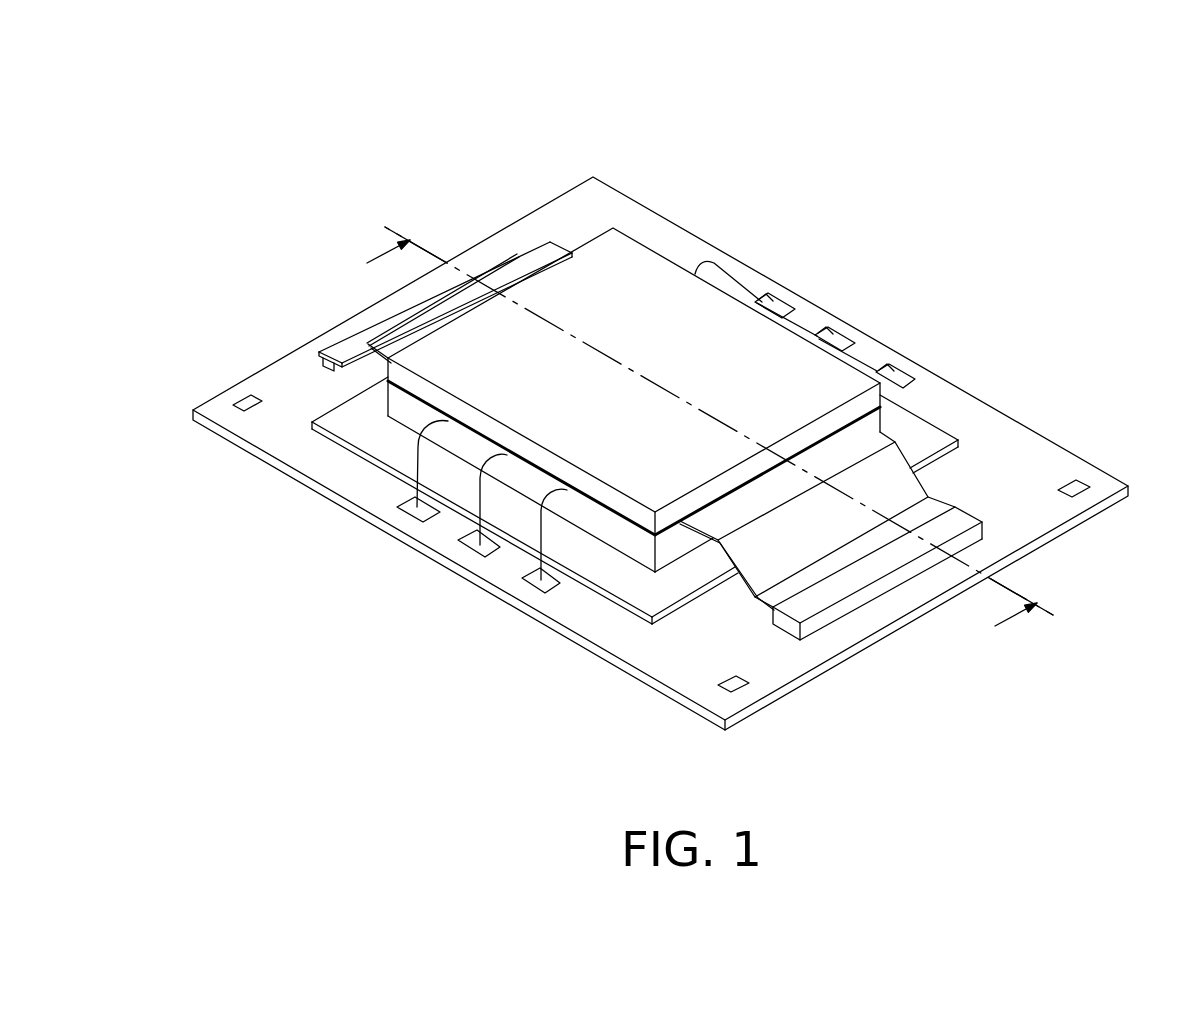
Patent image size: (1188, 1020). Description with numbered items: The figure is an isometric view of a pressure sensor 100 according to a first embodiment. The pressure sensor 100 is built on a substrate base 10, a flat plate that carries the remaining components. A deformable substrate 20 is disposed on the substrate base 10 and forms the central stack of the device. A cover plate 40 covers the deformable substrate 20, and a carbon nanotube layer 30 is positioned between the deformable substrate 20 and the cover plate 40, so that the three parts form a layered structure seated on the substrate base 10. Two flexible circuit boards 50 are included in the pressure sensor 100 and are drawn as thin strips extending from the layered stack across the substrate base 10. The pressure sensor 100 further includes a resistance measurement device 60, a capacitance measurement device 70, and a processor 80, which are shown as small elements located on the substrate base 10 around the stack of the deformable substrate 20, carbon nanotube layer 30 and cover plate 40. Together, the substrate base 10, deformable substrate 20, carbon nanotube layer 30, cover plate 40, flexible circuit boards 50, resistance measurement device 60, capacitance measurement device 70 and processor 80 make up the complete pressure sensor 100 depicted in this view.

The pressure sensor 100 is at (279, 113).
The substrate base 10 is at (1025, 442).
The deformable substrate 20 is at (628, 542).
The carbon nanotube layer 30 is at (620, 520).
The cover plate 40 is at (768, 345).
The flexible circuit boards 50 is at (889, 462).
The resistance measurement device 60 is at (747, 682).
The capacitance measurement device 70 is at (1080, 480).
The processor 80 is at (243, 400).